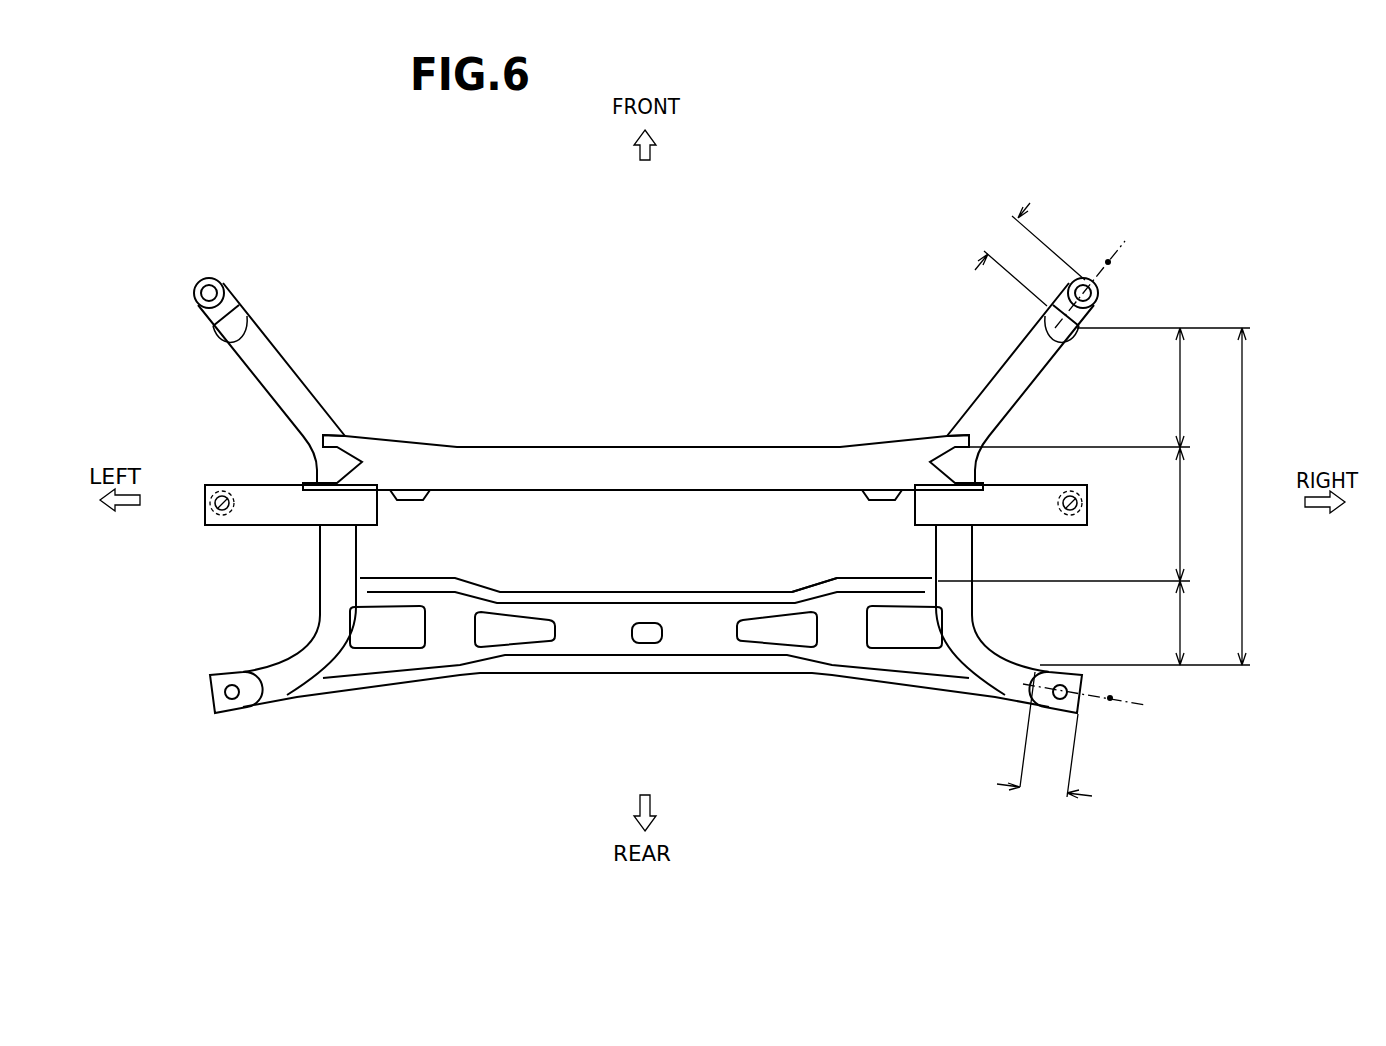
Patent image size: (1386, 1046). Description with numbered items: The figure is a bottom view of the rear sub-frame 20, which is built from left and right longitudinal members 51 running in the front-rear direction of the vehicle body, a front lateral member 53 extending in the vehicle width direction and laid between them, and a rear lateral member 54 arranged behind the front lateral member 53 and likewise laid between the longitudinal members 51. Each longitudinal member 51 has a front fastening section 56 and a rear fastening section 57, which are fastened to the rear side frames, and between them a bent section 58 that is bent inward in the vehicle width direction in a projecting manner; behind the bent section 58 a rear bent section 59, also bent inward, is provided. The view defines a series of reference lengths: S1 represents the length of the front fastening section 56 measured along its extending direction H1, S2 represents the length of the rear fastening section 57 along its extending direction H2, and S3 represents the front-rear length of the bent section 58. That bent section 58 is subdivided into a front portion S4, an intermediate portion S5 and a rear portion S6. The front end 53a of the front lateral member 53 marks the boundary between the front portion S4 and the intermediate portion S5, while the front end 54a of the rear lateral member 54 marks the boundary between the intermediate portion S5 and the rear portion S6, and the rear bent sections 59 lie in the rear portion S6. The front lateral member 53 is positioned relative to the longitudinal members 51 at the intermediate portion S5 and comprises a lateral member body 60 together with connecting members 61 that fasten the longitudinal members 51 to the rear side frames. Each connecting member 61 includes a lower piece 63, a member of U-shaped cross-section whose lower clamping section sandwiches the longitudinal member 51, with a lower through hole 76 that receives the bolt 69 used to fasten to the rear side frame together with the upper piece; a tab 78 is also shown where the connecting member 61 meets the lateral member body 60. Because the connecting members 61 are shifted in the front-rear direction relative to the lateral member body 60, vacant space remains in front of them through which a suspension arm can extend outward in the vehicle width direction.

The rear sub-frame 20 is at (142, 148).
The longitudinal member 51 is at (646, 428).
The front lateral member 53 is at (643, 403).
The front end of front lateral member 53a is at (697, 447).
The rear lateral member 54 is at (646, 507).
The front end of rear lateral member 54a is at (852, 578).
The front fastening section 56 is at (232, 288).
The rear fastening section 57 is at (250, 700).
The bent section 58 is at (307, 395).
The rear bent section 59 is at (293, 660).
The lateral member body 60 is at (567, 457).
The connecting member 61 is at (345, 499).
The lower piece 63 is at (654, 480).
The bolt 69 is at (222, 495).
The lower through hole 76 is at (220, 492).
The tab 78 is at (332, 440).
The extending direction of front fastening section H1 is at (1108, 262).
The extending direction of rear fastening section H2 is at (1110, 698).
The front fastening section length S1 is at (1029, 254).
The rear fastening section length S2 is at (1062, 743).
The bent section length S3 is at (1260, 496).
The front portion of bent section S4 is at (1109, 388).
The intermediate portion of bent section S5 is at (1078, 514).
The rear portion of bent section S6 is at (1145, 623).